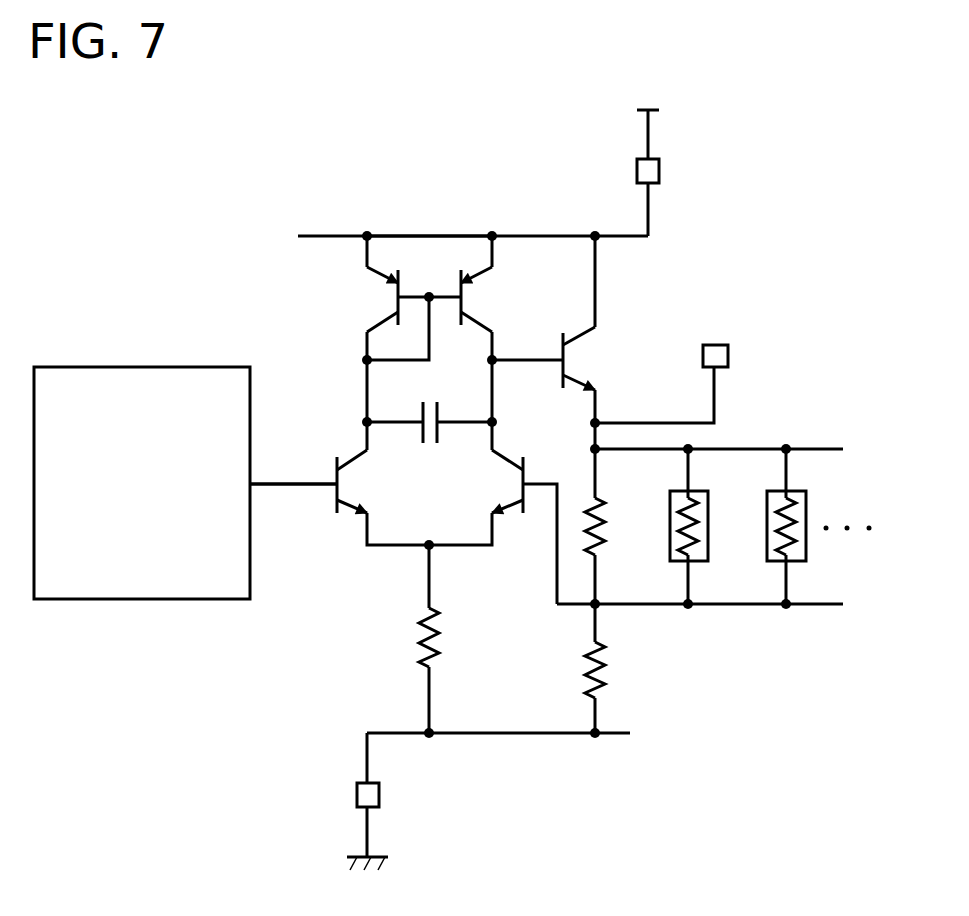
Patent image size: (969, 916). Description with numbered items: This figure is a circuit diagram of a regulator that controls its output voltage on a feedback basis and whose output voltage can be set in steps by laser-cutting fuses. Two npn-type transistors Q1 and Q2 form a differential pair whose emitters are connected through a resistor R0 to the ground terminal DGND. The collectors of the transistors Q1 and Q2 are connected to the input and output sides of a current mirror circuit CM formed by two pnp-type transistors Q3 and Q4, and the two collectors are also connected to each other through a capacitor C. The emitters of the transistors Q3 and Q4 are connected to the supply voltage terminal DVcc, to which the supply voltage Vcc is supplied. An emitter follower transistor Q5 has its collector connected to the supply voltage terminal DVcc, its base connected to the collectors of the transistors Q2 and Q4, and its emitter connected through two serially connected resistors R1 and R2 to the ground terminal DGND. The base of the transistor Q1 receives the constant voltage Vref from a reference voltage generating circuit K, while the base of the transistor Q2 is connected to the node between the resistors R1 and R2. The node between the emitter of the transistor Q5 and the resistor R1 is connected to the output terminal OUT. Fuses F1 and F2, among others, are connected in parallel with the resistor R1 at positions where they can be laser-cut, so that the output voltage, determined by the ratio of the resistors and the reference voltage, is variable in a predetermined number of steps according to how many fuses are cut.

The reference voltage generating circuit K is at (192, 367).
The reference voltage Vref is at (293, 469).
The npn-type transistor Q1 is at (345, 483).
The npn-type transistor Q2 is at (515, 488).
The pnp-type transistor Q3 is at (389, 297).
The pnp-type transistor Q4 is at (470, 300).
The emitter follower transistor Q5 is at (573, 361).
The current mirror circuit CM is at (430, 255).
The capacitor C is at (430, 412).
The resistor R0 is at (447, 643).
The resistor R1 is at (607, 533).
The resistor R2 is at (582, 670).
The fuse F1 is at (698, 546).
The fuse F2 is at (797, 546).
The output terminal OUT is at (750, 351).
The supply voltage terminal DVcc is at (660, 171).
The supply voltage Vcc is at (709, 126).
The ground terminal DGND is at (380, 795).